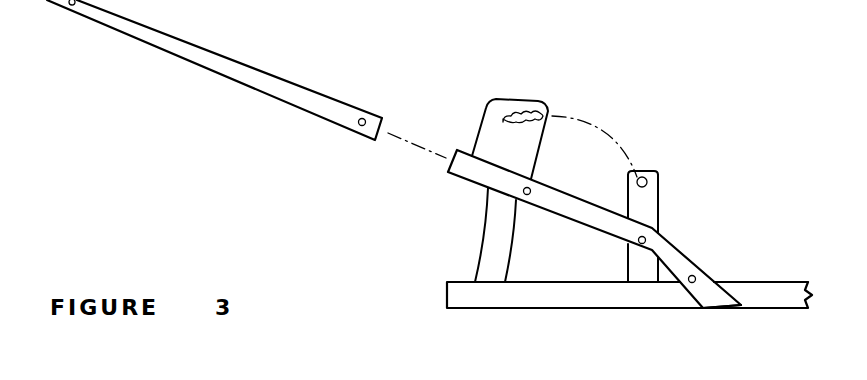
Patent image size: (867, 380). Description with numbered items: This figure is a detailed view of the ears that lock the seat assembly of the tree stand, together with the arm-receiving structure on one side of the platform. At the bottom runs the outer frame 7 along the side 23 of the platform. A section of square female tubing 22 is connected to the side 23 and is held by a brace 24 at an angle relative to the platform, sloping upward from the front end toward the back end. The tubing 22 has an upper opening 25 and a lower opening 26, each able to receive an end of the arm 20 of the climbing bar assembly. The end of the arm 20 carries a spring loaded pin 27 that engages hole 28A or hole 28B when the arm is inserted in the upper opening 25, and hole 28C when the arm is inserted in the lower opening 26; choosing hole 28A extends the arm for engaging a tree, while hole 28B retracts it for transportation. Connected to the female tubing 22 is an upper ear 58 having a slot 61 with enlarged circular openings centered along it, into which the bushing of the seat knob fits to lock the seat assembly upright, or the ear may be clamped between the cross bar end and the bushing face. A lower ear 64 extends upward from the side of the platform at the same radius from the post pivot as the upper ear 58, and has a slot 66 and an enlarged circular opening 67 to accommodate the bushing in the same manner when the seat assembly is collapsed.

The outer frame 7 is at (811, 298).
The arm 20 is at (181, 39).
The female tubing 22 is at (475, 179).
The side of platform 23 is at (782, 290).
The brace 24 is at (482, 262).
The upper opening 25 is at (449, 167).
The lower opening 26 is at (720, 308).
The spring loaded pin 27 is at (362, 122).
The hole 28A is at (531, 187).
The hole 28B is at (646, 236).
The hole 28C is at (697, 276).
The upper ear 58 is at (497, 108).
The slot 61 is at (542, 115).
The lower ear 64 is at (658, 181).
The slot 66 is at (641, 177).
The enlarged circular opening 67 is at (529, 111).